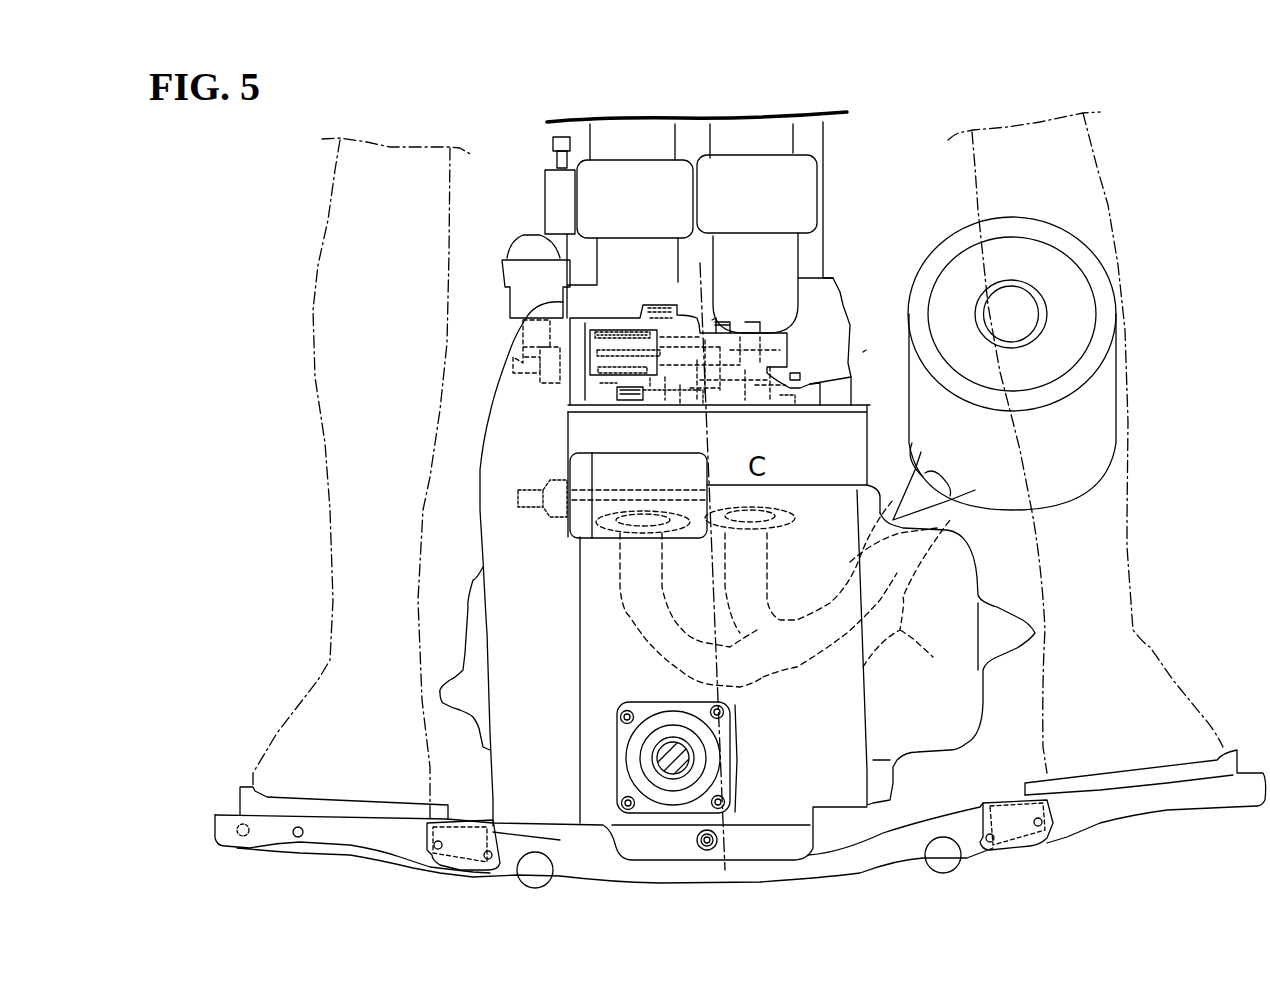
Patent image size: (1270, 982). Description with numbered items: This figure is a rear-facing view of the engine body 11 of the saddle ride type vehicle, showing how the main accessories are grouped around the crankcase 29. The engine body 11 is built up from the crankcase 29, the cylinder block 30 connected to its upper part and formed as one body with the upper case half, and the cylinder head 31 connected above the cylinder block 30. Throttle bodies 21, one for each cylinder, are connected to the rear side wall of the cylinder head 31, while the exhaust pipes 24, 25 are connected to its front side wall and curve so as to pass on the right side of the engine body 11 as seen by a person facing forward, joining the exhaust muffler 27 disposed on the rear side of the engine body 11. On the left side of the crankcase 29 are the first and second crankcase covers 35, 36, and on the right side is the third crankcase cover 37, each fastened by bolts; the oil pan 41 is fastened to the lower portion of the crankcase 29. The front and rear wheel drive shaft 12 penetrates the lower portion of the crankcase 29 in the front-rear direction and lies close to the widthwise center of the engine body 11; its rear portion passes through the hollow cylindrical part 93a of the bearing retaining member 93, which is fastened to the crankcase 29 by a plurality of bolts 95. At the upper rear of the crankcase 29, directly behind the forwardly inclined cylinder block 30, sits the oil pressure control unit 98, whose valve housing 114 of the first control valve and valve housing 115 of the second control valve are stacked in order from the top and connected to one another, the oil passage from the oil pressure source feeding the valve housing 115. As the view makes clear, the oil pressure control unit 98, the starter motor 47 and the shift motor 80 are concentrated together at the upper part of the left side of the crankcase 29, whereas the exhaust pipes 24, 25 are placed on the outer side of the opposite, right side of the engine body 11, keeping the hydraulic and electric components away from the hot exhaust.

The engine body 11 is at (862, 352).
The front and rear wheel drive shaft 12 is at (666, 750).
The throttle bodies 21 is at (641, 185).
The exhaust pipe 24 is at (763, 680).
The exhaust pipe 25 is at (926, 658).
The exhaust muffler 27 is at (1106, 395).
The crankcase 29 is at (801, 576).
The cylinder block 30 is at (849, 383).
The cylinder head 31 is at (830, 300).
The first crankcase cover 35 is at (477, 657).
The second crankcase cover 36 is at (493, 540).
The third crankcase cover 37 is at (963, 572).
The oil pan 41 is at (793, 838).
The starter motor 47 is at (573, 342).
The shift motor 80 is at (612, 478).
The bearing retaining member 93 is at (662, 729).
The hollow cylindrical part 93a is at (680, 707).
The bolts 95 is at (614, 801).
The oil pressure control unit 98 is at (768, 330).
The valve housing 114 is at (713, 333).
The valve housing 115 is at (797, 393).